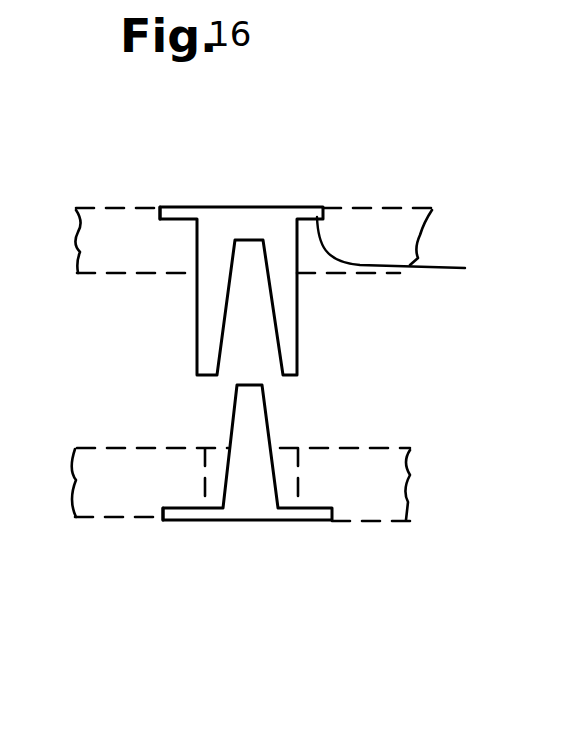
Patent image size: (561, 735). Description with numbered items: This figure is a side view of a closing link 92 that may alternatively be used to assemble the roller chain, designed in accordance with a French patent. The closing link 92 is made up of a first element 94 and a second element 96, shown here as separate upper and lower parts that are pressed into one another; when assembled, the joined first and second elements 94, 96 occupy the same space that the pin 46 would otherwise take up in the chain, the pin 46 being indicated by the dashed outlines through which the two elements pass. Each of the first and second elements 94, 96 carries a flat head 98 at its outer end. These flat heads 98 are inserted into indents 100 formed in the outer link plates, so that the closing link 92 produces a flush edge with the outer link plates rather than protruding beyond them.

The pin 46 is at (119, 247).
The closing link 92 is at (286, 402).
The first element 94 is at (258, 222).
The second element 96 is at (252, 495).
The flat head 98 is at (315, 212).
The indent 100 is at (163, 516).